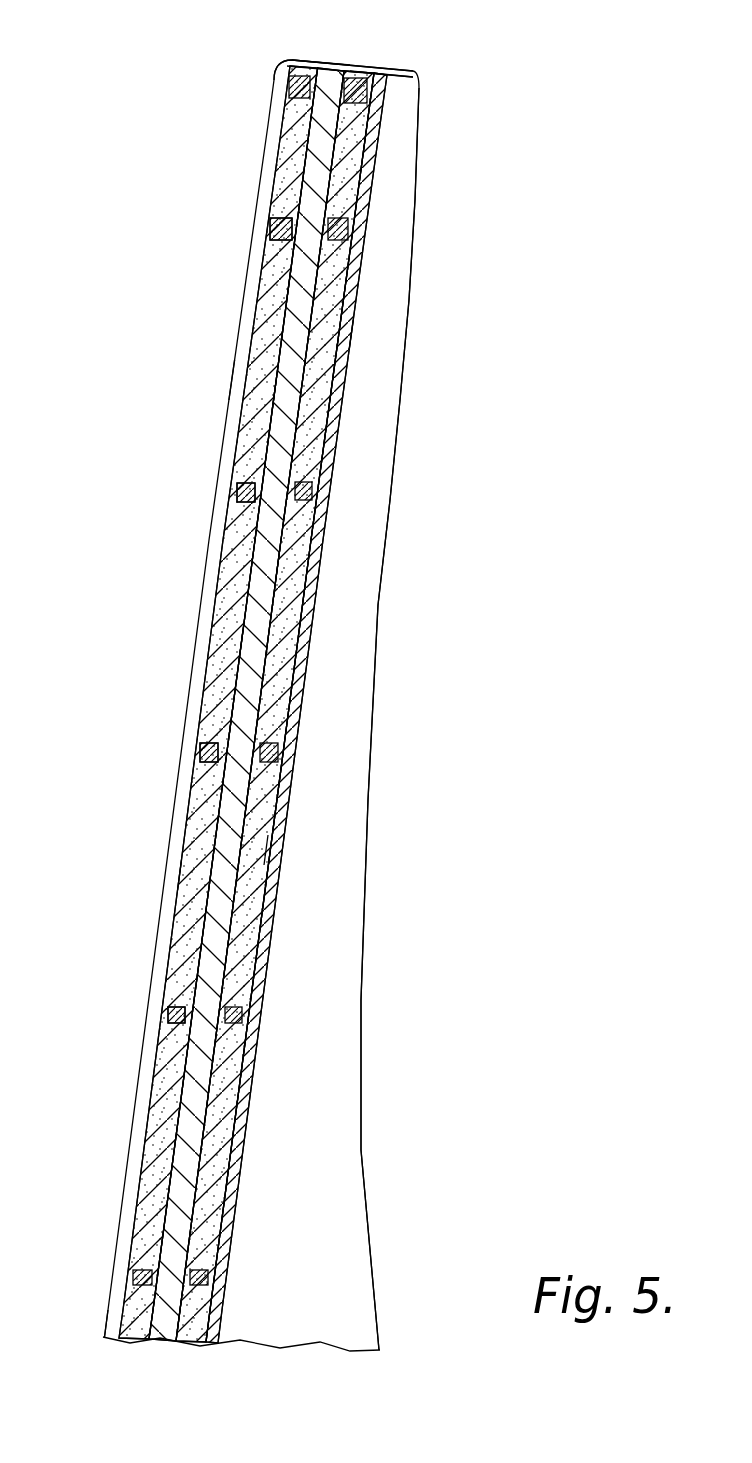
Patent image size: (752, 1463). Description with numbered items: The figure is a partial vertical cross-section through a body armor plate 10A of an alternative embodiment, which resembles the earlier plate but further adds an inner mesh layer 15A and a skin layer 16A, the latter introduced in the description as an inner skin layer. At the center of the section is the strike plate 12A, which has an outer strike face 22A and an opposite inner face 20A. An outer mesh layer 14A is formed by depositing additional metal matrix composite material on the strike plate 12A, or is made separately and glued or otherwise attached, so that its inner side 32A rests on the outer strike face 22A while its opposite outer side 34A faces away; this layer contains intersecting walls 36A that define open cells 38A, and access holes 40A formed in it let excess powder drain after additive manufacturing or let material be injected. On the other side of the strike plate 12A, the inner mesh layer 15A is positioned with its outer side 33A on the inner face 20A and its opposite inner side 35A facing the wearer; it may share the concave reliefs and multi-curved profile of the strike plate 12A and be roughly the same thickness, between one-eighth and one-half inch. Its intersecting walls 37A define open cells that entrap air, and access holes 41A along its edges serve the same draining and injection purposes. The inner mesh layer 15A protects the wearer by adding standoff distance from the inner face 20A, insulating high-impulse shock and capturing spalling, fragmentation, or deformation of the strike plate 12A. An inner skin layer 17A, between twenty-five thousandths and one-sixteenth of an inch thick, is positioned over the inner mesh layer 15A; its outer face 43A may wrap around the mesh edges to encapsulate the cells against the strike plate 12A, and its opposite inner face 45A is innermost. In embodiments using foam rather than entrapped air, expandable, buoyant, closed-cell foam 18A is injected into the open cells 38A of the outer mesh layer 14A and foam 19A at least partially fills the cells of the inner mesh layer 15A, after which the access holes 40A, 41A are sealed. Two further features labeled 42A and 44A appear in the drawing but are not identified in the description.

The body armor plate 10A is at (516, 56).
The strike plate 12A is at (330, 130).
The outer mesh layer 14A is at (287, 140).
The inner mesh layer 15A is at (345, 200).
The inner skin layer 16A is at (280, 85).
The inner skin layer 17A is at (352, 258).
The foam 18A is at (132, 1323).
The foam 19A is at (198, 1311).
The inner face of the strike plate 20A is at (322, 463).
The outer strike face of the strike plate 22A is at (268, 397).
The inner side of the outer mesh layer 32A is at (232, 722).
The outer side of the inner mesh layer 33A is at (270, 652).
The outer side of the outer mesh layer 34A is at (183, 875).
The inner side of the inner mesh layer 35A is at (272, 848).
The intersecting walls 36A is at (238, 490).
The intersecting walls 37A is at (305, 490).
The open cells 38A is at (283, 217).
The access holes 40A is at (303, 66).
The access holes 41A is at (358, 74).
The first layer inner surface 42A is at (272, 286).
The outer face of the inner skin layer 43A is at (300, 565).
The shell side wall 44A is at (228, 373).
The inner face of the inner skin layer 45A is at (345, 328).